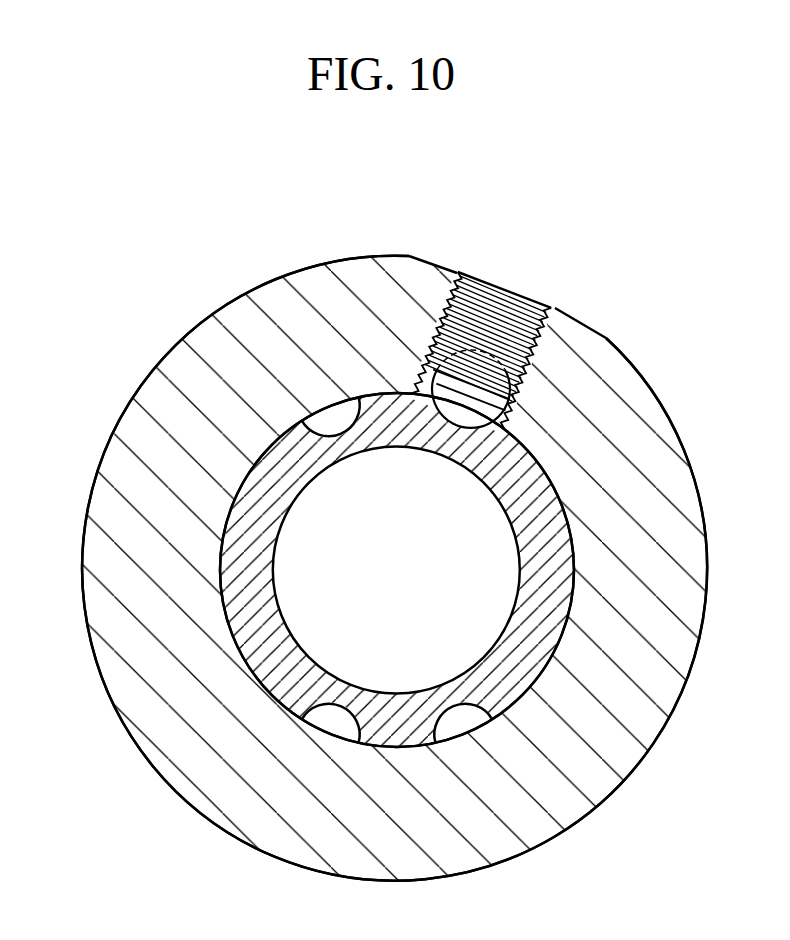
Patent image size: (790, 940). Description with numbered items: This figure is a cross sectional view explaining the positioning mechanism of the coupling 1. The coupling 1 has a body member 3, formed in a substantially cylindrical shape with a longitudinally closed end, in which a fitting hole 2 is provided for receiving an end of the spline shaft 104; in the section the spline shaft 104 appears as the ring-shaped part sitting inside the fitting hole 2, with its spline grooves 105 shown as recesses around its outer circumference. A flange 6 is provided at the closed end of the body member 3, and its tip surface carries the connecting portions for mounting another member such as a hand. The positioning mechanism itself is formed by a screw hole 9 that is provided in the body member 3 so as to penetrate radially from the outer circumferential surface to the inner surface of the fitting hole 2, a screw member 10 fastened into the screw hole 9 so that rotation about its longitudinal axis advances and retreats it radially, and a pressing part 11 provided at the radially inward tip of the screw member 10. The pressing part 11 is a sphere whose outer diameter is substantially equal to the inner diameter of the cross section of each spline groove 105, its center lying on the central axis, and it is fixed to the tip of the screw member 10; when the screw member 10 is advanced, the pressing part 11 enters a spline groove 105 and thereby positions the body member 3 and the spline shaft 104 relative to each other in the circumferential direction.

The coupling 1 is at (120, 212).
The fitting hole 2 is at (228, 515).
The body member 3 is at (218, 313).
The flange 6 is at (336, 263).
The screw hole 9 is at (536, 320).
The screw member 10 is at (545, 375).
The pressing part 11 is at (468, 406).
The spline shaft 104 is at (228, 633).
The spline groove 105 is at (440, 408).